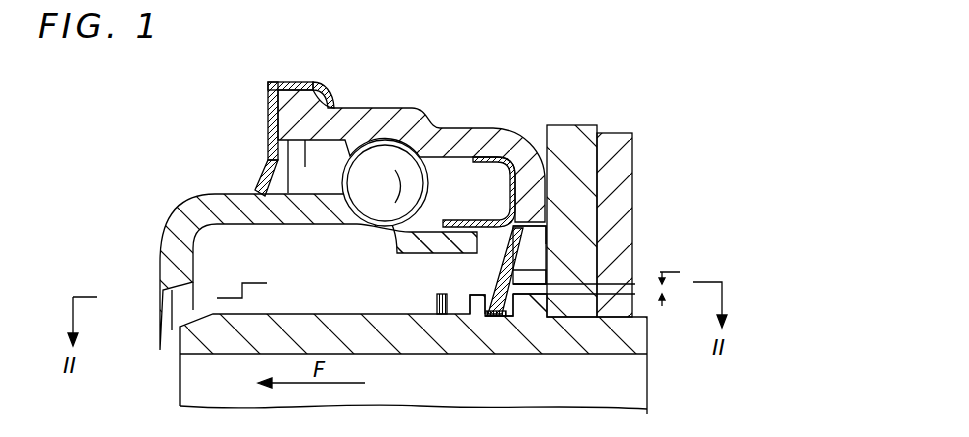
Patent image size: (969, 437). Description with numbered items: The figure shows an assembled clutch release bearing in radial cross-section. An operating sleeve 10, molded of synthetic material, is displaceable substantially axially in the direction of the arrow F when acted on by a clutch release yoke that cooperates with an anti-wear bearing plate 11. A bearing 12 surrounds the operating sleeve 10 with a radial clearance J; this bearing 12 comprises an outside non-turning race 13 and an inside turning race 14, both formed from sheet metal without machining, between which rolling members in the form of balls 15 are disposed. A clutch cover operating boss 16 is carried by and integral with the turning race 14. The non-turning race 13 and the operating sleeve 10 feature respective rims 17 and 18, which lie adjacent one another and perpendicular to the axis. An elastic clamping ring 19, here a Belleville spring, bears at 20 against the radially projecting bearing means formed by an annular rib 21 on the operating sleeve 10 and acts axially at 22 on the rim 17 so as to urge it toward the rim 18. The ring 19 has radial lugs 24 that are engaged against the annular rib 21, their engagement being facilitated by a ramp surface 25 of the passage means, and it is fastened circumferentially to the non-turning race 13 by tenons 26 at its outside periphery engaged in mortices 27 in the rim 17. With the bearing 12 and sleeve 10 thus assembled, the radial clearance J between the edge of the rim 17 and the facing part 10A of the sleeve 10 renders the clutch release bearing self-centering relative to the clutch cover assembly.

The operating sleeve 10 is at (225, 343).
The part of the sleeve 10A is at (530, 297).
The anti-wear bearing plate 11 is at (612, 138).
The bearing 12 is at (252, 130).
The outside non-turning race 13 is at (470, 130).
The inside turning race 14 is at (403, 247).
The balls 15 is at (394, 195).
The clutch cover operating boss 16 is at (172, 220).
The rim 17 is at (524, 190).
The rim 18 is at (576, 135).
The elastic clamping ring 19 is at (510, 270).
The bearing point 20 is at (496, 316).
The annular rib 21 is at (472, 300).
The acting point 22 is at (517, 228).
The radial lugs 24 is at (520, 306).
The ramp surface 25 is at (460, 303).
The tenons 26 is at (537, 243).
The mortices 27 is at (537, 266).
The radial clearance J is at (596, 278).